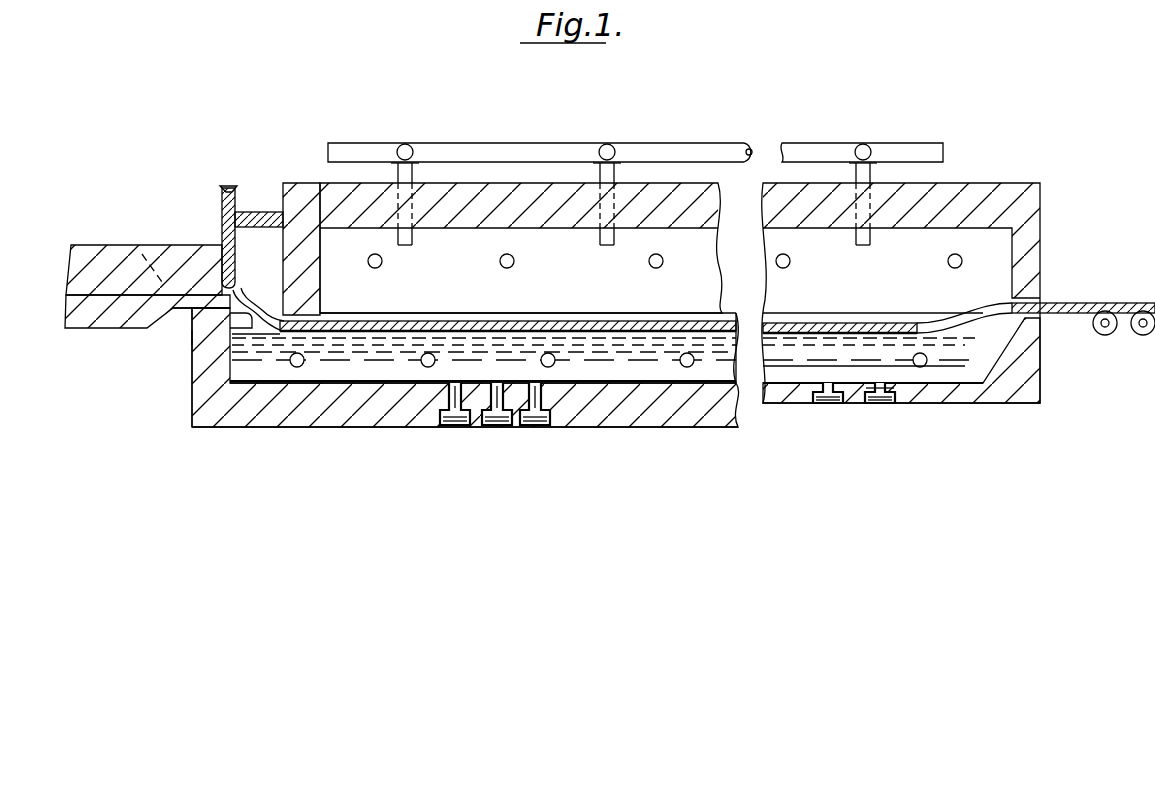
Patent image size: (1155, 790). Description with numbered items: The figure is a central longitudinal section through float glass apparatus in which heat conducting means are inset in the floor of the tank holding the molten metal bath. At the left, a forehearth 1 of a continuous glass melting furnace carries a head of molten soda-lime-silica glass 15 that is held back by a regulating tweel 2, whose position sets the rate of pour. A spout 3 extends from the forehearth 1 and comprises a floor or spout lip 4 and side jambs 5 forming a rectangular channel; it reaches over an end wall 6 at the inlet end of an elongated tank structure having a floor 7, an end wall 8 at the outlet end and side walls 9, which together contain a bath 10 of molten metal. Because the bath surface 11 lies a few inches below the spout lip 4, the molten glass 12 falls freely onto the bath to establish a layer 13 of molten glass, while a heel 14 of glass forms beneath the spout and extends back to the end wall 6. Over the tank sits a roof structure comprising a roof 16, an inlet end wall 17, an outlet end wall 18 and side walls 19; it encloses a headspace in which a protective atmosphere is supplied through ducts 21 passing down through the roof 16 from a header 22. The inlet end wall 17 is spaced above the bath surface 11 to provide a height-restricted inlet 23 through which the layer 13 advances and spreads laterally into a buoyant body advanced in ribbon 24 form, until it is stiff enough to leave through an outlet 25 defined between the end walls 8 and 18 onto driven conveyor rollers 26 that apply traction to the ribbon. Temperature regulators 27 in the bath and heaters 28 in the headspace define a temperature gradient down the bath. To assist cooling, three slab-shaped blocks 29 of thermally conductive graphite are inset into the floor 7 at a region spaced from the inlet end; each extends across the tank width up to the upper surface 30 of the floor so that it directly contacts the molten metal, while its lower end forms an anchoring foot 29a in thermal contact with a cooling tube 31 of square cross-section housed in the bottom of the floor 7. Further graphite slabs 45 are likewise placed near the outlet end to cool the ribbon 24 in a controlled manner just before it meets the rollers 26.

The forehearth 1 is at (106, 313).
The regulating tweel 2 is at (222, 210).
The spout 3 is at (186, 313).
The spout lip 4 is at (192, 337).
The side jambs 5 is at (240, 284).
The end wall 6 is at (198, 373).
The floor 7 is at (623, 412).
The end wall 8 is at (1030, 377).
The side walls 9 is at (903, 321).
The bath 10 is at (370, 377).
The surface 11 is at (332, 337).
The molten glass 12 is at (247, 299).
The layer of molten glass 13 is at (317, 333).
The heel 14 is at (193, 405).
The head of molten soda-lime-silica glass 15 is at (139, 263).
The roof 16 is at (673, 193).
The end wall 17 is at (299, 205).
The end wall 18 is at (1023, 218).
The side walls 19 is at (698, 245).
The ducts 21 is at (406, 172).
The header 22 is at (554, 150).
The inlet 23 is at (316, 312).
The ribbon 24 is at (523, 325).
The outlet 25 is at (1027, 297).
The driven conveyor rollers 26 is at (1146, 331).
The temperature regulators 27 is at (687, 368).
The heaters 28 is at (500, 262).
The blocks of thermally conductive material 29 is at (440, 425).
The anchoring foot 29a is at (463, 409).
The upper surface 30 is at (595, 390).
The cooling tube 31 is at (470, 430).
The graphite slabs 45 is at (844, 403).